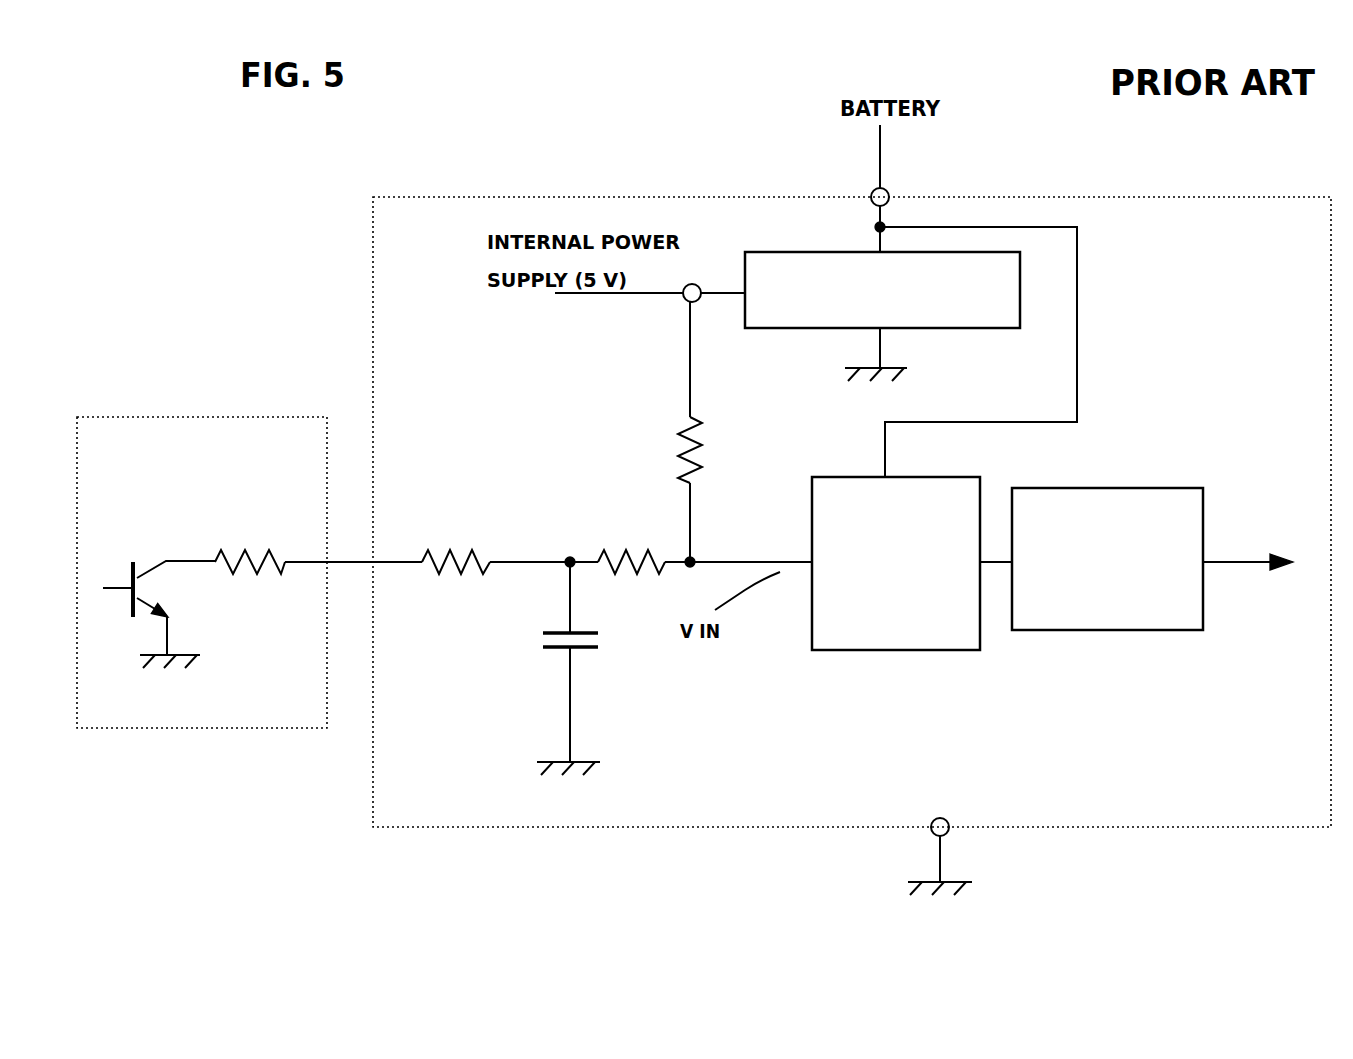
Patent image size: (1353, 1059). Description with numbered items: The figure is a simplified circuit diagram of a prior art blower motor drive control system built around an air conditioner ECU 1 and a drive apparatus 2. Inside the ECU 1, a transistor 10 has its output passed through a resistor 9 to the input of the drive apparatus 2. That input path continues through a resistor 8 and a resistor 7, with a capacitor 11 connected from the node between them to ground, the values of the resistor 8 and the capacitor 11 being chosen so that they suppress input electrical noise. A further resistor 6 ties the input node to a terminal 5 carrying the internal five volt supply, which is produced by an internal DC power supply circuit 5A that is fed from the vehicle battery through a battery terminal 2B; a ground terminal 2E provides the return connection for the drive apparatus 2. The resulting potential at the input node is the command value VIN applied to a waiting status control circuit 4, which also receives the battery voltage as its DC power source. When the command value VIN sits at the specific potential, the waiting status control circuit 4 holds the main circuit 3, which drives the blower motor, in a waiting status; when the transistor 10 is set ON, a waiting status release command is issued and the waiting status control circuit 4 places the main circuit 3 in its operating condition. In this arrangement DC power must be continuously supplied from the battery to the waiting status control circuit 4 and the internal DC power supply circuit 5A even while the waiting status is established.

The air conditioner ECU 1 is at (220, 410).
The drive apparatus 2 is at (1135, 193).
The battery terminal 2B is at (855, 190).
The ground terminal 2E is at (928, 840).
The main circuit 3 is at (1093, 632).
The waiting status control circuit 4 is at (897, 654).
The internal power supply terminal 5 is at (678, 300).
The internal DC power supply circuit 5A is at (798, 335).
The pull-up resistor 6 is at (658, 443).
The resistor 7 is at (607, 545).
The resistor 8 is at (470, 540).
The resistor 9 is at (236, 556).
The transistor 10 is at (146, 552).
The capacitor 11 is at (530, 645).